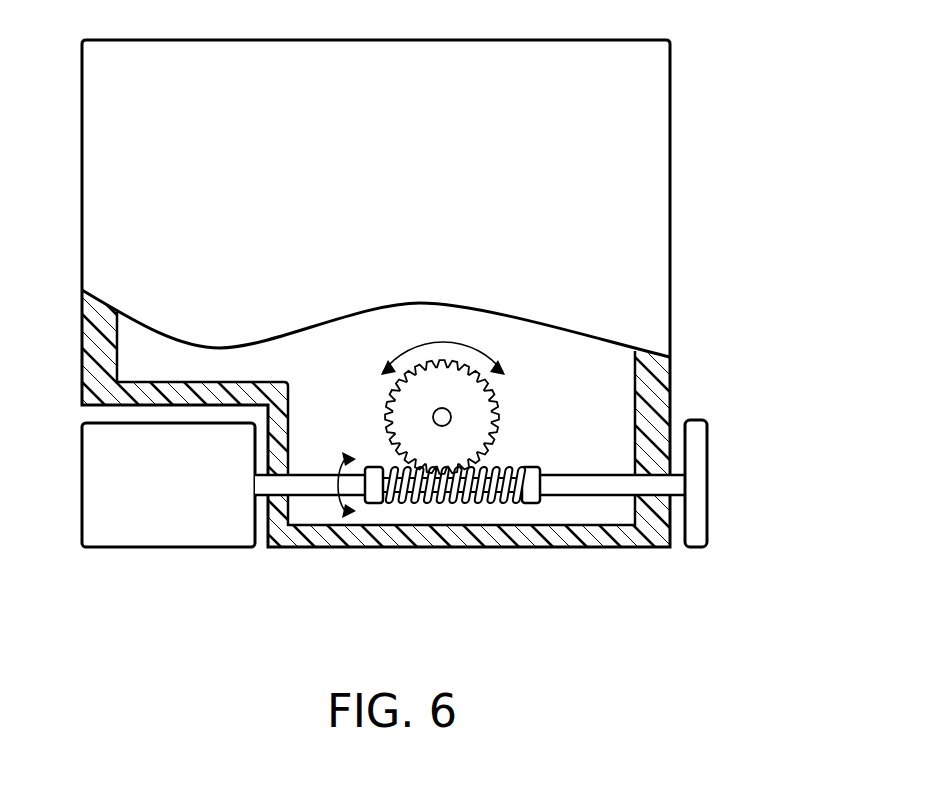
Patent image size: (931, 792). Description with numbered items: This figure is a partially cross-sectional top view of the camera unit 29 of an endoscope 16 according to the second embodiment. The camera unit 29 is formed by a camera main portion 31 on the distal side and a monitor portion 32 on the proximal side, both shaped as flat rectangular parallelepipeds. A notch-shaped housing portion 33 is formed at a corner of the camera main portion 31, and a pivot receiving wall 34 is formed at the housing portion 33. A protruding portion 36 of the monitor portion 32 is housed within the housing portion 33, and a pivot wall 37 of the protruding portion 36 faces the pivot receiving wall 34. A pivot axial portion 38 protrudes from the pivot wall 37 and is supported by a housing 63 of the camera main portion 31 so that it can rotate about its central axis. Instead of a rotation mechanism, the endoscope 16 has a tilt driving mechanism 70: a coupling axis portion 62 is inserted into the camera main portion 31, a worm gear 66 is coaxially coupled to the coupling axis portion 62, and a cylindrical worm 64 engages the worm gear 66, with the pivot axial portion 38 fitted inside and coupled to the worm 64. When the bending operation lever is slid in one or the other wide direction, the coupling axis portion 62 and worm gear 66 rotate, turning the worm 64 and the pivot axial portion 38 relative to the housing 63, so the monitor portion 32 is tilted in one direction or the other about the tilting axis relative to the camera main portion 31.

The endoscope 16 is at (740, 86).
The camera unit 29 is at (720, 189).
The camera main portion 31 is at (538, 70).
The monitor portion 32 is at (98, 488).
The housing portion 33 is at (175, 395).
The pivot receiving wall 34 is at (270, 430).
The protruding portion 36 is at (150, 547).
The pivot wall 37 is at (250, 515).
The pivot axial portion 38 is at (300, 500).
The coupling axis portion 62 is at (436, 414).
The housing 63 is at (663, 382).
The worm 64 is at (443, 502).
The worm gear 66 is at (497, 400).
The tilt driving mechanism 70 is at (524, 348).